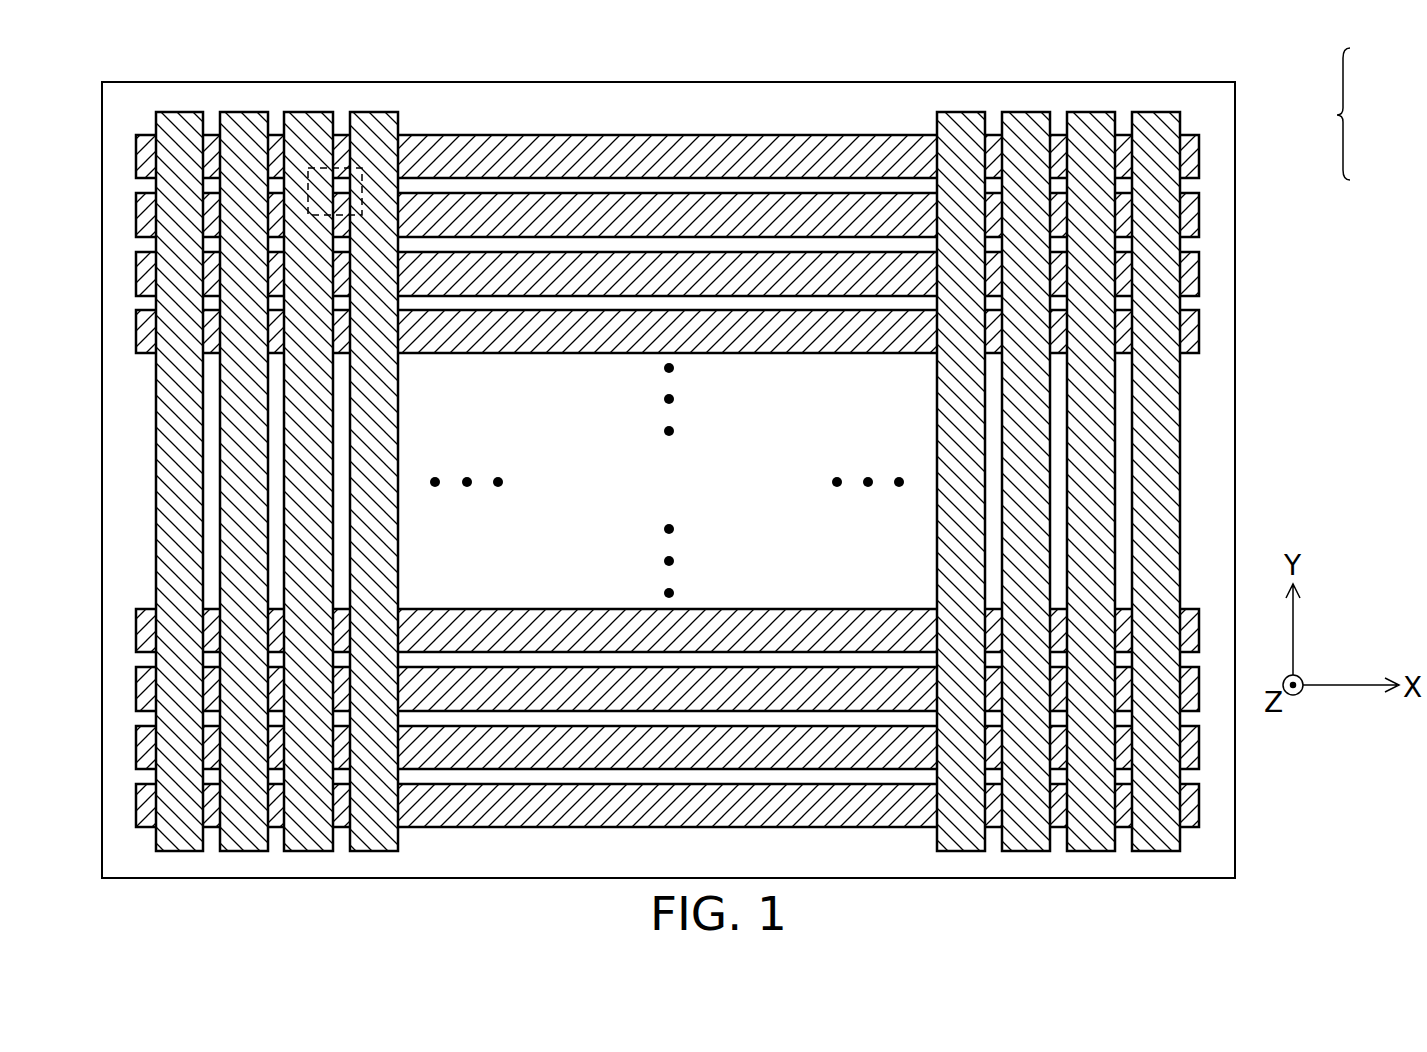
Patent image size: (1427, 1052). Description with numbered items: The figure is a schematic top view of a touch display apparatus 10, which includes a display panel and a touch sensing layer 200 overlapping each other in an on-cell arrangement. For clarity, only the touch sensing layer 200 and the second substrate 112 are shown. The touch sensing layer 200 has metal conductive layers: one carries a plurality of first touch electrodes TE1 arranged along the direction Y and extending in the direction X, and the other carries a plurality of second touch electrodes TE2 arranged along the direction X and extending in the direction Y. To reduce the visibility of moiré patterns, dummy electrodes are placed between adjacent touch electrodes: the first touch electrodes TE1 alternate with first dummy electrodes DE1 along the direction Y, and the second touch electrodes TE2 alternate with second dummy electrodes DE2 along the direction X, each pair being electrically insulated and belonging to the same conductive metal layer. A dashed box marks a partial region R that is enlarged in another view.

The touch display apparatus 10 is at (1310, 887).
The second substrate 112 is at (1237, 218).
The touch sensing layer 200 is at (1343, 115).
The first touch electrode TE1 is at (141, 212).
The second touch electrode TE2 is at (179, 112).
The first dummy electrode DE1 is at (141, 154).
The second dummy electrode DE2 is at (245, 112).
The partial region R is at (364, 181).